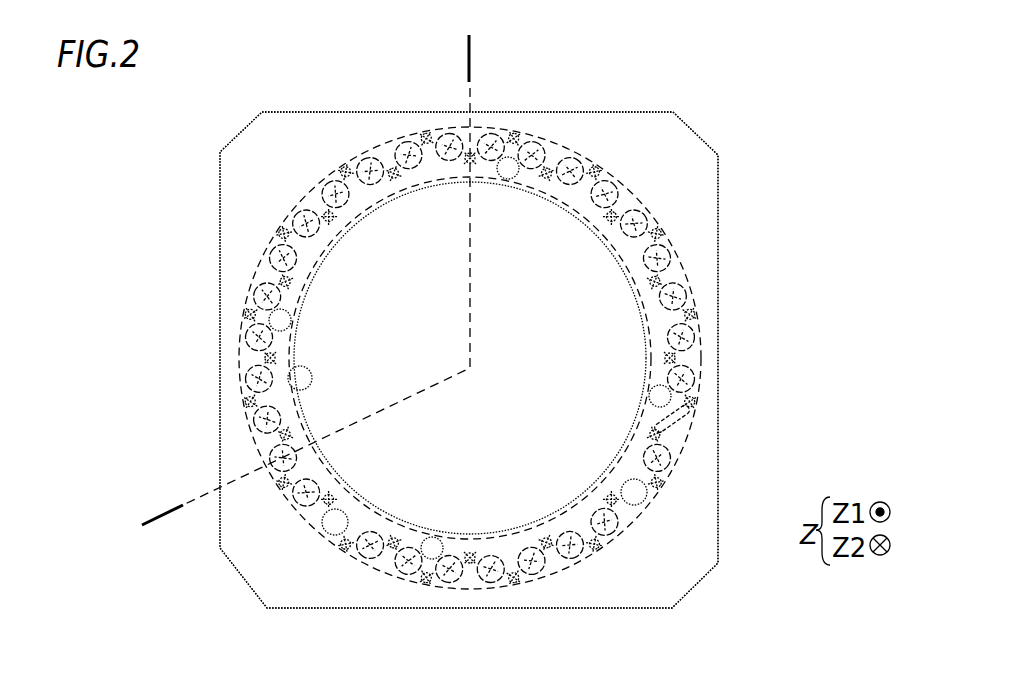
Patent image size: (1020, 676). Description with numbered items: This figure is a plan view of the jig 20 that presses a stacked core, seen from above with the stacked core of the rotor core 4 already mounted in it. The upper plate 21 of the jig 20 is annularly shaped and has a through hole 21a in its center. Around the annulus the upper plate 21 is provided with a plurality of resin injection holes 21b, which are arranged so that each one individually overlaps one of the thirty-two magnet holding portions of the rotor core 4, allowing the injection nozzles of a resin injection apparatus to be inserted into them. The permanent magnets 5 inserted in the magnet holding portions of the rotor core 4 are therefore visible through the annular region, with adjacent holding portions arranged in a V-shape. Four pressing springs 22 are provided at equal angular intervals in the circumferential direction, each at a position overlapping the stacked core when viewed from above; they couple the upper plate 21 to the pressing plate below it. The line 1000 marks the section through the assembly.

The jig 20 is at (203, 122).
The upper plate 21 is at (220, 222).
The through hole 21a is at (303, 375).
The resin injection holes 21b is at (322, 520).
The pressing spring 22 is at (518, 160).
The rotor core 4 is at (625, 183).
The permanent magnet 5 is at (345, 165).
The section line / rotation axis 1000 is at (466, 60).